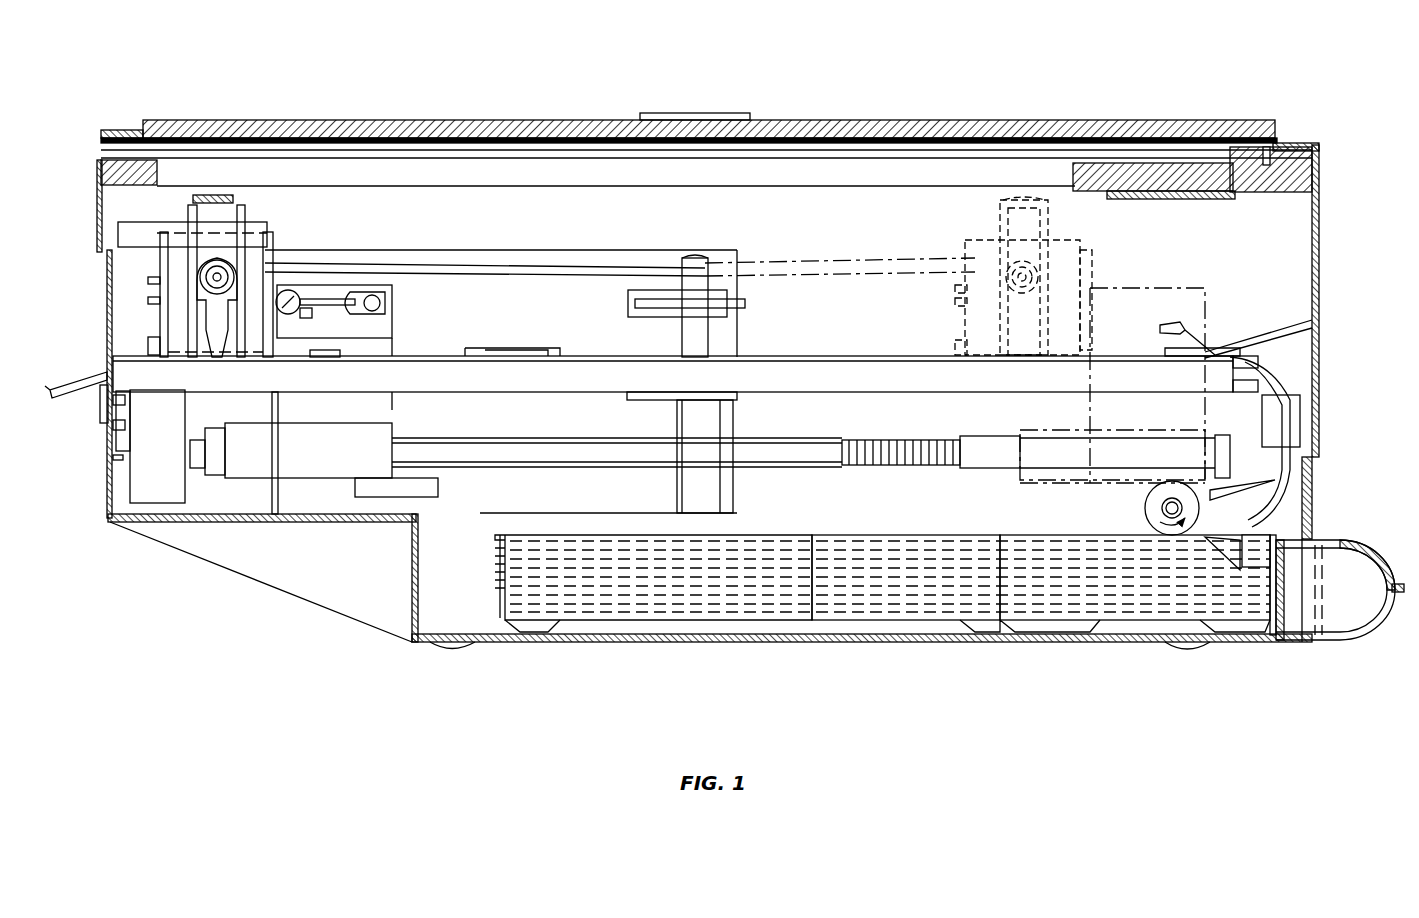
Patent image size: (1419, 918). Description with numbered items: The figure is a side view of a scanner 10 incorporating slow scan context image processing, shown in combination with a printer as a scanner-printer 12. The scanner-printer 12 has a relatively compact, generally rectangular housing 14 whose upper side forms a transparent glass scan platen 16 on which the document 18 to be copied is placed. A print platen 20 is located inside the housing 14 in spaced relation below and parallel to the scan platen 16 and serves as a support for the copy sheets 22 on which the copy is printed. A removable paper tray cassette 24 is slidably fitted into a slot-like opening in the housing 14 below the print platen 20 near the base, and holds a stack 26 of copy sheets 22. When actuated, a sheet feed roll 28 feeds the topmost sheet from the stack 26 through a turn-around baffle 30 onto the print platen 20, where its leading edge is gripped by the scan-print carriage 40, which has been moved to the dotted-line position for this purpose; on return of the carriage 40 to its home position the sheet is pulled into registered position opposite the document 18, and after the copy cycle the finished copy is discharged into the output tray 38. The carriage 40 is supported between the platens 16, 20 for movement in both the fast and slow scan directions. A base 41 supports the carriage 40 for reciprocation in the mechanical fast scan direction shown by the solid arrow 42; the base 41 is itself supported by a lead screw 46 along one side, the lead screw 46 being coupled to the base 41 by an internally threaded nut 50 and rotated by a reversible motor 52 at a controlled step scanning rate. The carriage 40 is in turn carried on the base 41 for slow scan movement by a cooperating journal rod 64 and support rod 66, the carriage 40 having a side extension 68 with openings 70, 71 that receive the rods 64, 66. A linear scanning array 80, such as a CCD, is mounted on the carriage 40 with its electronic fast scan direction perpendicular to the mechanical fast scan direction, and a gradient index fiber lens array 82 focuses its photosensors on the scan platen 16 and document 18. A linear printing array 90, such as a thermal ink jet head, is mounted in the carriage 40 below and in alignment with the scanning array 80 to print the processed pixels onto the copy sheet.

The scanner 10 is at (585, 105).
The scanner-printer 12 is at (95, 285).
The housing 14 is at (1320, 205).
The scan platen 16 is at (538, 160).
The document 18 is at (500, 115).
The print platen 20 is at (882, 372).
The copy sheets 22 is at (805, 350).
The paper tray cassette 24 is at (1360, 545).
The stack 26 is at (490, 630).
The sheet feed roll 28 is at (1160, 515).
The turn-around baffle 30 is at (1340, 410).
The output tray 38 is at (75, 385).
The scan-print carriage 40 is at (334, 219).
The base 41 is at (396, 438).
The mechanical fast scan direction arrow 42 is at (610, 236).
The lead screw 46 is at (902, 440).
The internally threaded nut 50 is at (300, 455).
The reversible motor 52 is at (162, 480).
The journal rod 64 is at (300, 290).
The support rod 66 is at (395, 302).
The side extension 68 is at (380, 285).
The opening 70 is at (290, 358).
The opening 71 is at (410, 400).
The linear scanning array 80 is at (215, 235).
The gradient index fiber lens array 82 is at (213, 212).
The linear printing array 90 is at (215, 360).